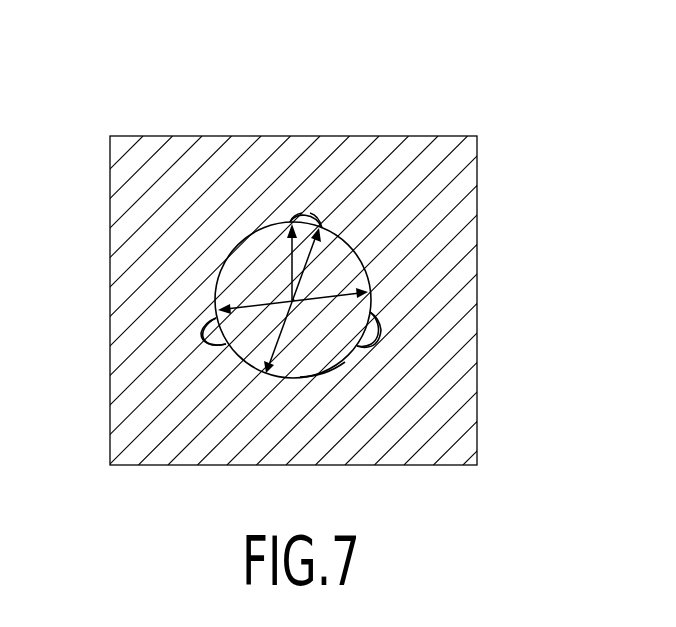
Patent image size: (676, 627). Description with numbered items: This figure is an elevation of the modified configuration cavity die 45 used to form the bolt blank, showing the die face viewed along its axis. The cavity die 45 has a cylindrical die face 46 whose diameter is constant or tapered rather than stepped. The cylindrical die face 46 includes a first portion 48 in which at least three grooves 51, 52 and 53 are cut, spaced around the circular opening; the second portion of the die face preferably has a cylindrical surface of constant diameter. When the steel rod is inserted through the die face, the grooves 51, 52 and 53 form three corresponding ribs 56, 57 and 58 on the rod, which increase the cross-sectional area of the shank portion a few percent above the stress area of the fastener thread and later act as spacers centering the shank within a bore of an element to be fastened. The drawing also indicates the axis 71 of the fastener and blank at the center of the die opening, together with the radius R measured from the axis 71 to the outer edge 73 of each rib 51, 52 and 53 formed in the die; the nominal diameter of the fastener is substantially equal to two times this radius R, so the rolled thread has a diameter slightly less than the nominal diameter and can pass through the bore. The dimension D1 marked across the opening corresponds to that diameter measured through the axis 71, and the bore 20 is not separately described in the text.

The bore 20 is at (346, 236).
The cavity die 45 is at (486, 155).
The cylindrical die face 46 is at (329, 383).
The first portion 48 is at (368, 262).
The groove 51 is at (224, 343).
The groove 52 is at (293, 220).
The groove 53 is at (355, 344).
The rib 56 is at (222, 333).
The rib 57 is at (300, 224).
The rib 58 is at (350, 340).
The axis 71 is at (289, 300).
The outer edge 73 is at (292, 220).
The radius R is at (292, 267).
The diameter D1 is at (373, 305).